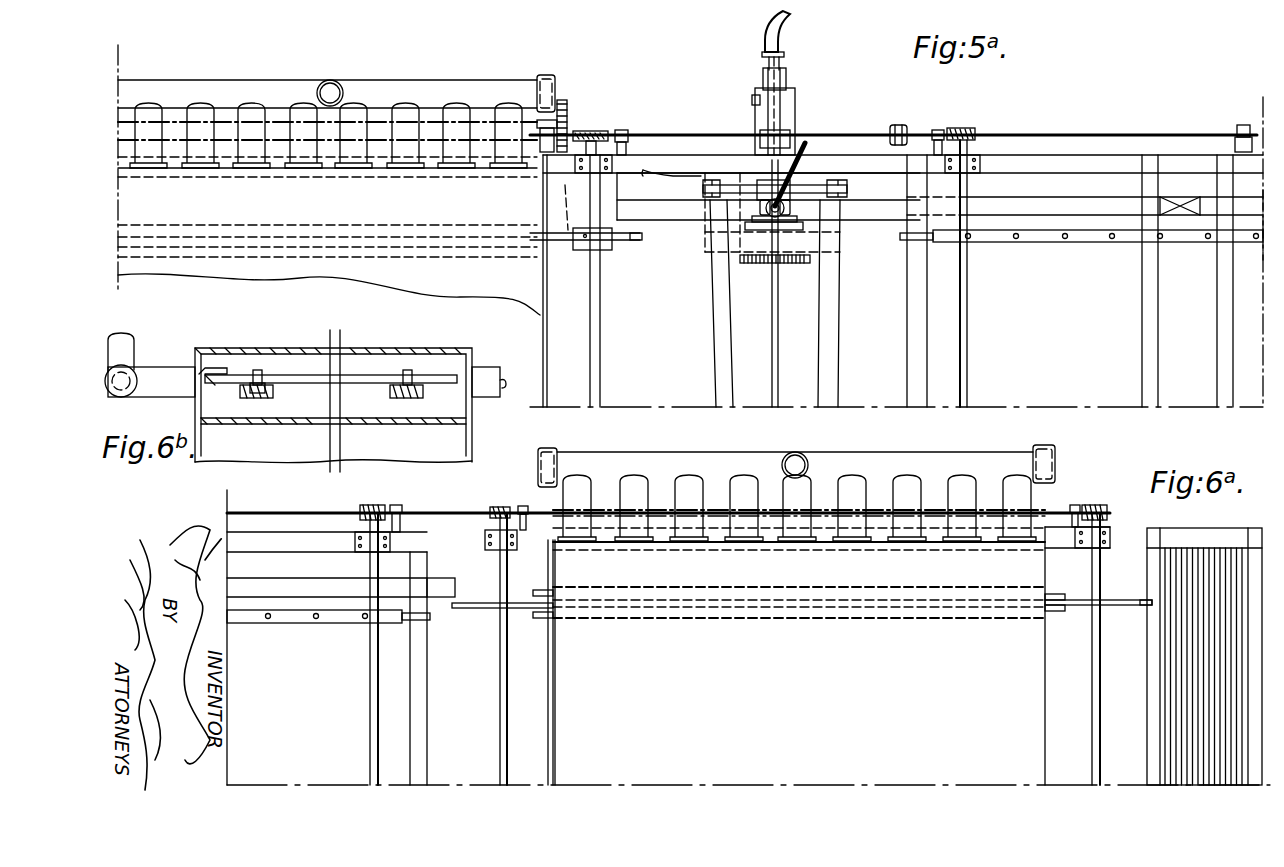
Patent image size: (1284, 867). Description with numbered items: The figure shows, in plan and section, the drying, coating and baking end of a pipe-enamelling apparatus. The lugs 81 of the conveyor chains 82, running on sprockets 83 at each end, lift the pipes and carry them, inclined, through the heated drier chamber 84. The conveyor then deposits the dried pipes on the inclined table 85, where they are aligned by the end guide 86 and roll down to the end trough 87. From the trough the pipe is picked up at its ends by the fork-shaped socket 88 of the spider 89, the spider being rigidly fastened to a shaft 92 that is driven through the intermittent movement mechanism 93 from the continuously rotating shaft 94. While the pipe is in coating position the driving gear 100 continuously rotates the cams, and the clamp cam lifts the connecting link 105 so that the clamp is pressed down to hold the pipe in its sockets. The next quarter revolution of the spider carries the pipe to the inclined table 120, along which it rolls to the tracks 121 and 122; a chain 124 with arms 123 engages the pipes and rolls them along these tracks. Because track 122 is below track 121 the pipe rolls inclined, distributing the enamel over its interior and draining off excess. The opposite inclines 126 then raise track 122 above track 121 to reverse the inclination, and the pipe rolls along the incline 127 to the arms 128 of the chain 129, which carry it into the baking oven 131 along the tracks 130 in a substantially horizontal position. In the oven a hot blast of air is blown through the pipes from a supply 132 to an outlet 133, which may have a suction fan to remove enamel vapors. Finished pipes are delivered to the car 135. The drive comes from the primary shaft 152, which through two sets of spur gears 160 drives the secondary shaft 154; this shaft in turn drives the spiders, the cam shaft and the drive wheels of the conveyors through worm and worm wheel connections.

In FIG. 5A, the lugs 81 is at (636, 243).
In FIG. 5A, the conveyor chains 82 is at (568, 243).
In FIG. 5A, the sprockets 83 is at (570, 207).
In FIG. 5A, the drier chamber 84 is at (329, 180).
In FIG. 5A, the inclined table 85 is at (672, 205).
In FIG. 5A, the end guide 86 is at (664, 207).
In FIG. 5A, the end trough 87 is at (722, 208).
In FIG. 5A, the socket 88 is at (840, 190).
In FIG. 5A, the spider 89 is at (790, 210).
In FIG. 5A, the shaft 92 is at (790, 236).
In FIG. 5A, the intermittent movement mechanism 93 is at (755, 210).
In FIG. 5A, the continuously rotating shaft 94 is at (780, 275).
In FIG. 5A, the driving gear 100 is at (756, 264).
In FIG. 5A, the connecting link 105 is at (800, 135).
In FIG. 5A, the inclined table 120 is at (873, 205).
In FIG. 5A, the track 121 is at (1049, 208).
In FIG. 6A, the track 122 is at (293, 588).
In FIG. 5A, the arms 123 is at (920, 243).
In FIG. 6A, the arms 123 is at (418, 622).
In FIG. 5A, the chain 124 is at (1028, 243).
In FIG. 6A, the chain 124 is at (290, 625).
In FIG. 5A, the opposite inclines 126 is at (1176, 205).
In FIG. 6A, the incline 127 is at (438, 584).
In FIG. 6B, the arms 128 is at (258, 370).
In FIG. 6A, the arms 128 is at (486, 608).
In FIG. 6B, the chain 129 is at (262, 398).
In FIG. 6A, the chain 129 is at (532, 616).
In FIG. 6B, the tracks 130 is at (243, 400).
In FIG. 6A, the tracks 130 is at (538, 590).
In FIG. 6B, the baking oven 131 is at (315, 360).
In FIG. 6A, the baking oven 131 is at (748, 649).
In FIG. 6B, the supply 132 is at (163, 375).
In FIG. 6A, the supply 132 is at (853, 460).
In FIG. 6B, the outlet 133 is at (493, 385).
In FIG. 6A, the car 135 is at (1185, 666).
In FIG. 5A, the primary shaft 152 is at (488, 122).
In FIG. 5A, the secondary shaft 154 is at (447, 142).
In FIG. 6A, the secondary shaft 154 is at (455, 512).
In FIG. 5A, the spur gears 160 is at (567, 110).